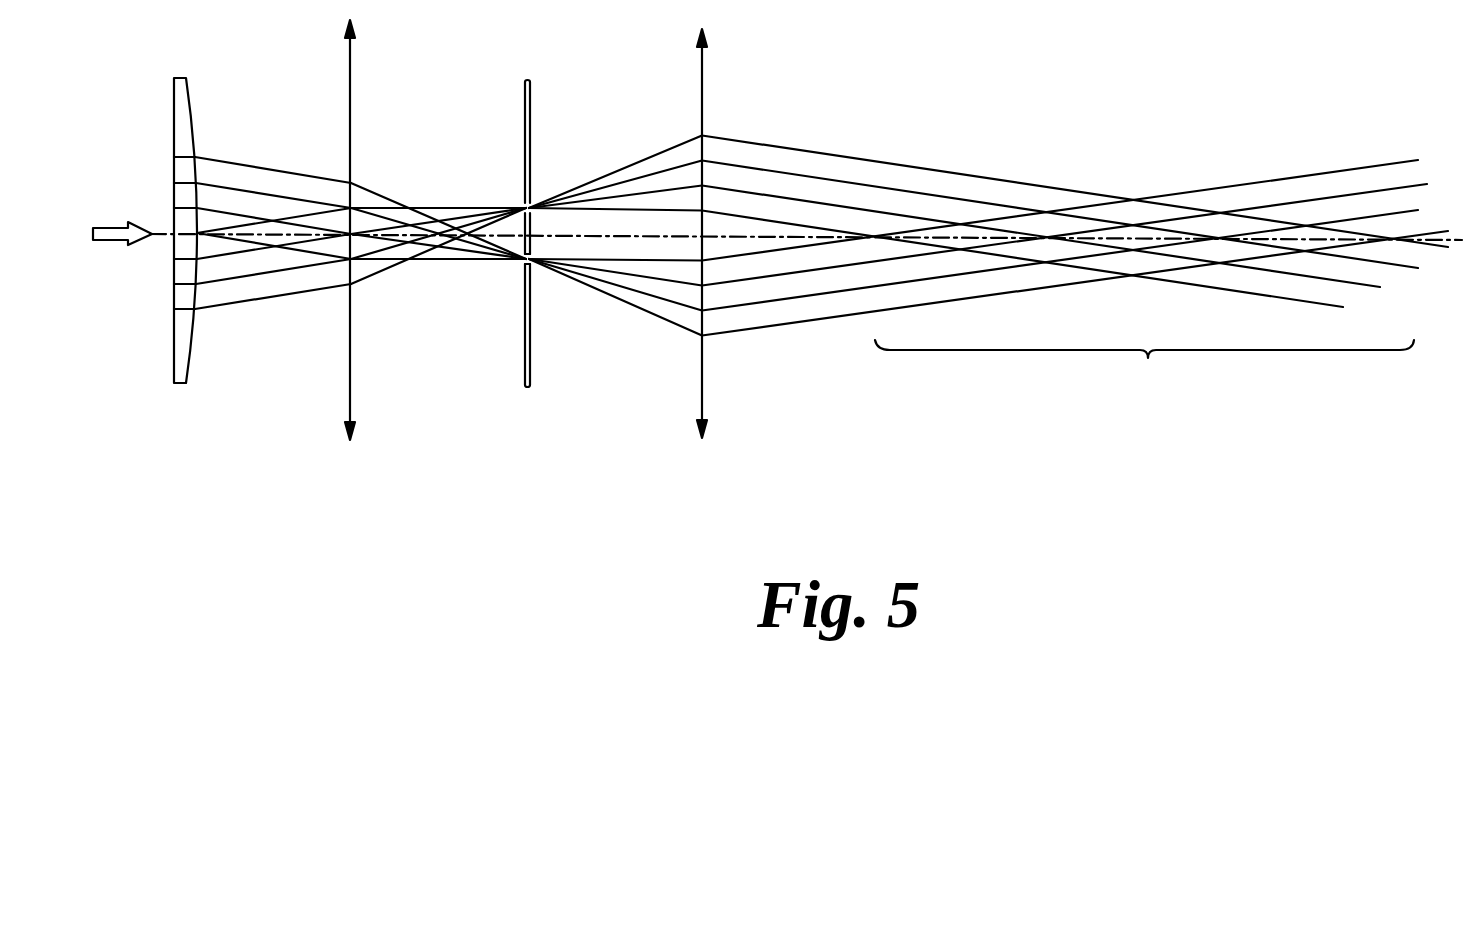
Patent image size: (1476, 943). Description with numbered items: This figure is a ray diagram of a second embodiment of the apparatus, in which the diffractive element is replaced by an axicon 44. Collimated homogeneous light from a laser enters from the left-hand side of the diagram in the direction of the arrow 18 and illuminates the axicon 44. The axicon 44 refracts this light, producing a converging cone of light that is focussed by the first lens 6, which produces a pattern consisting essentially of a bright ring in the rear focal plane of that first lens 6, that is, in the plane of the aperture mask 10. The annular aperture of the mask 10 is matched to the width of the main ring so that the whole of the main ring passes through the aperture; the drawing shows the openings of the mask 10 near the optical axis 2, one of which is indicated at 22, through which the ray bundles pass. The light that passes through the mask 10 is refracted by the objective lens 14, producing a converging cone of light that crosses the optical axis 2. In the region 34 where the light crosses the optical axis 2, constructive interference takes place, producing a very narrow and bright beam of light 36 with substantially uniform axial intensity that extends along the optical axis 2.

The optical axis 2 is at (585, 238).
The first lens 6 is at (350, 117).
The aperture mask 10 is at (532, 107).
The objective lens 14 is at (703, 82).
The arrow 18 is at (117, 238).
The aperture opening 22 is at (522, 262).
The region 34 is at (1075, 265).
The beam of light 36 is at (1162, 240).
The axicon 44 is at (180, 103).